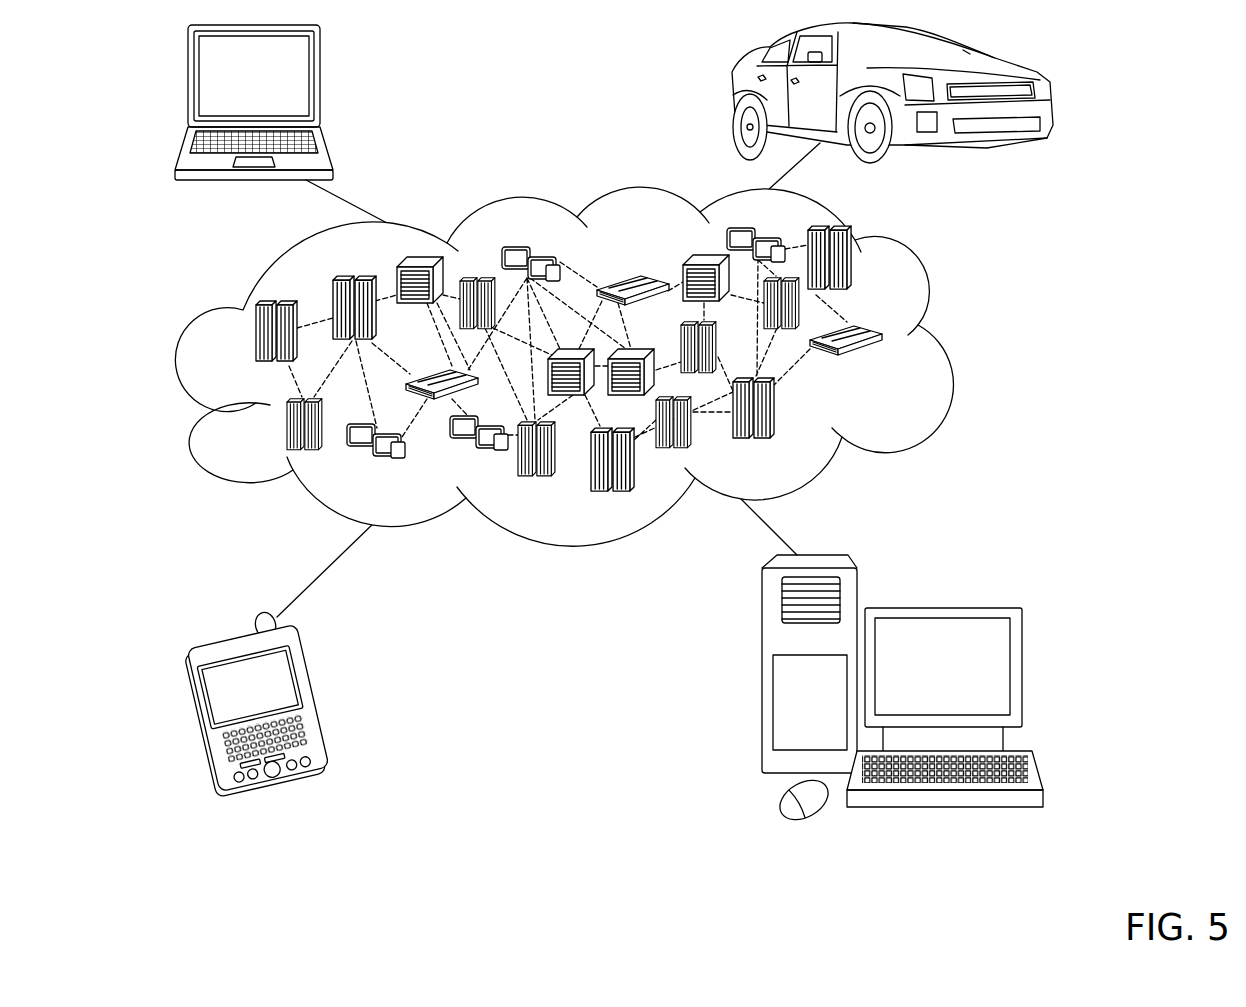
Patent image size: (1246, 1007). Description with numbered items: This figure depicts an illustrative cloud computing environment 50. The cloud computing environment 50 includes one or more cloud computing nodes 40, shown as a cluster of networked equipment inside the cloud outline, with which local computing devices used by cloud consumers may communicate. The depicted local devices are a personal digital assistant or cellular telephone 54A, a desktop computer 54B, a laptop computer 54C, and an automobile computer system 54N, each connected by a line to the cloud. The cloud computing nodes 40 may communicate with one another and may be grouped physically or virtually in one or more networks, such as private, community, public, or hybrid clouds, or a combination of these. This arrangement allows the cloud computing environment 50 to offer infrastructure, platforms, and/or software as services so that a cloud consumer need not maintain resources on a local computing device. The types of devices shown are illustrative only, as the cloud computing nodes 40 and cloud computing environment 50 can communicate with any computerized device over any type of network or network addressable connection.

The cloud computing environment 50 is at (942, 335).
The cloud computing nodes 40 is at (619, 358).
The personal digital assistant or cellular telephone 54A is at (313, 700).
The desktop computer 54B is at (943, 608).
The laptop computer 54C is at (321, 83).
The automobile computer system 54N is at (730, 93).